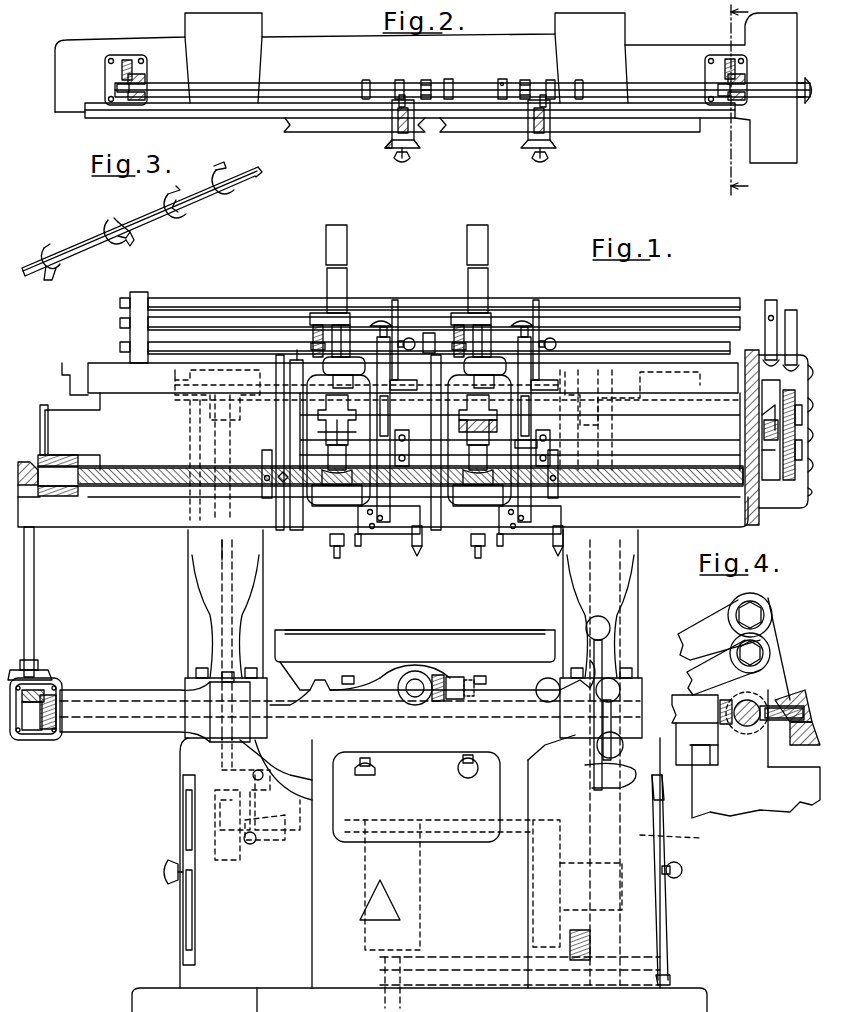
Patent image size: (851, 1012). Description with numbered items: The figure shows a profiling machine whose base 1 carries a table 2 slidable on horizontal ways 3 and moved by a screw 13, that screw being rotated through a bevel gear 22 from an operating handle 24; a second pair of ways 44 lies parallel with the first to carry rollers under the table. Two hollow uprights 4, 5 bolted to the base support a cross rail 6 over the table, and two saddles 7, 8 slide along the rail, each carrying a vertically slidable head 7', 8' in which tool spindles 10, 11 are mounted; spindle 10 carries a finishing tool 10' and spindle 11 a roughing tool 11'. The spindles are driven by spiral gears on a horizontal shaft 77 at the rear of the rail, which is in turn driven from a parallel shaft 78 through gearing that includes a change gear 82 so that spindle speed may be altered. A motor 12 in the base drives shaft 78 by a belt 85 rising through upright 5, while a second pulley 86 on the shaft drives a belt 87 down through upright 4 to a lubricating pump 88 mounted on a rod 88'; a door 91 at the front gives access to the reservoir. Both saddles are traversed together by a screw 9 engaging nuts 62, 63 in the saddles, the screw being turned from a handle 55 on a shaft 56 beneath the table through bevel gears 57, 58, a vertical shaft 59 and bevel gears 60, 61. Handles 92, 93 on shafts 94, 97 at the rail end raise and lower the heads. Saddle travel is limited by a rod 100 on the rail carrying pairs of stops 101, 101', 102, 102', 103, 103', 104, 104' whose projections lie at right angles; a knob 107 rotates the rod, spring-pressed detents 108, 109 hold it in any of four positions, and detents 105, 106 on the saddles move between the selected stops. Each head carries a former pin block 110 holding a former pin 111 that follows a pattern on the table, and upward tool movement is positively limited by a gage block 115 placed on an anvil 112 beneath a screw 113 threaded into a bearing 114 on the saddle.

In FIG. 1, the base 1 is at (200, 900).
In FIG. 1, the table 2 is at (385, 640).
In FIG. 1, the horizontal ways 3 is at (300, 692).
In FIG. 2, the upright 4 is at (746, 100).
In FIG. 1, the upright 4 is at (196, 622).
In FIG. 1, the upright 5 is at (625, 552).
In FIG. 1, the cross rail 6 is at (166, 520).
In FIG. 4, the cross rail 6 is at (770, 805).
In FIG. 2, the saddle 7 is at (354, 140).
In FIG. 1, the saddle 7 is at (292, 468).
In FIG. 1, the head 7' is at (294, 455).
In FIG. 2, the saddle 8 is at (570, 140).
In FIG. 1, the saddle 8 is at (407, 285).
In FIG. 1, the head 8' is at (481, 465).
In FIG. 1, the screw 9 is at (125, 470).
In FIG. 1, the tool spindle 10 is at (338, 409).
In FIG. 1, the finishing tool 10' is at (338, 560).
In FIG. 1, the tool spindle 11 is at (479, 409).
In FIG. 1, the roughing tool 11' is at (479, 560).
In FIG. 1, the motor 12 is at (550, 835).
In FIG. 1, the screw 13 is at (400, 690).
In FIG. 1, the bevel gear 22 is at (440, 700).
In FIG. 1, the operating handle 24 is at (528, 706).
In FIG. 1, the second pair of ways 44 is at (348, 684).
In FIG. 1, the handle 55 is at (600, 788).
In FIG. 1, the shaft 56 is at (118, 712).
In FIG. 1, the bevel gear 57 is at (45, 730).
In FIG. 1, the bevel gear 58 is at (30, 740).
In FIG. 1, the vertical shaft 59 is at (34, 600).
In FIG. 1, the bevel gear 60 is at (25, 470).
In FIG. 1, the bevel gear 61 is at (45, 445).
In FIG. 1, the nut 62 is at (272, 500).
In FIG. 1, the nut 63 is at (560, 500).
In FIG. 1, the horizontal shaft 77 is at (648, 432).
In FIG. 1, the parallel shaft 78 is at (672, 400).
In FIG. 1, the change gear 82 is at (780, 505).
In FIG. 1, the belt 85 is at (690, 838).
In FIG. 1, the second pulley 86 is at (225, 395).
In FIG. 1, the belt 87 is at (226, 562).
In FIG. 1, the lubricating pump 88 is at (260, 798).
In FIG. 1, the rod 88' is at (236, 835).
In FIG. 1, the door 91 is at (352, 825).
In FIG. 1, the handle 92 is at (768, 300).
In FIG. 4, the handle 92 is at (710, 622).
In FIG. 1, the handle 93 is at (791, 310).
In FIG. 4, the handle 93 is at (700, 674).
In FIG. 1, the shaft 94 is at (552, 298).
In FIG. 1, the shaft 97 is at (604, 318).
In FIG. 2, the rod 100 is at (231, 86).
In FIG. 3, the rod 100 is at (155, 215).
In FIG. 1, the rod 100 is at (678, 345).
In FIG. 4, the rod 100 is at (744, 728).
In FIG. 2, the adjustable stop 101 is at (349, 68).
In FIG. 3, the adjustable stop 101 is at (39, 249).
In FIG. 2, the adjustable stop 101' is at (579, 70).
In FIG. 2, the adjustable stop 102 is at (390, 72).
In FIG. 3, the adjustable stop 102 is at (102, 221).
In FIG. 2, the adjustable stop 102' is at (538, 79).
In FIG. 2, the adjustable stop 103 is at (422, 75).
In FIG. 3, the adjustable stop 103 is at (195, 212).
In FIG. 2, the adjustable stop 103' is at (516, 67).
In FIG. 2, the adjustable stop 104 is at (452, 68).
In FIG. 3, the adjustable stop 104 is at (246, 183).
In FIG. 2, the adjustable stop 104' is at (488, 75).
In FIG. 2, the detent 105 is at (400, 158).
In FIG. 2, the detent 106 is at (537, 162).
In FIG. 2, the knob 107 is at (808, 100).
In FIG. 2, the spring-pressed detent 108 is at (722, 80).
In FIG. 4, the spring-pressed detent 108 is at (768, 760).
In FIG. 2, the spring-pressed detent 109 is at (120, 80).
In FIG. 1, the former pin block 110 is at (395, 522).
In FIG. 1, the former pin 111 is at (422, 546).
In FIG. 1, the anvil 112 is at (530, 540).
In FIG. 1, the screw 113 is at (508, 462).
In FIG. 1, the bearing 114 is at (537, 444).
In FIG. 1, the gage block 115 is at (358, 546).